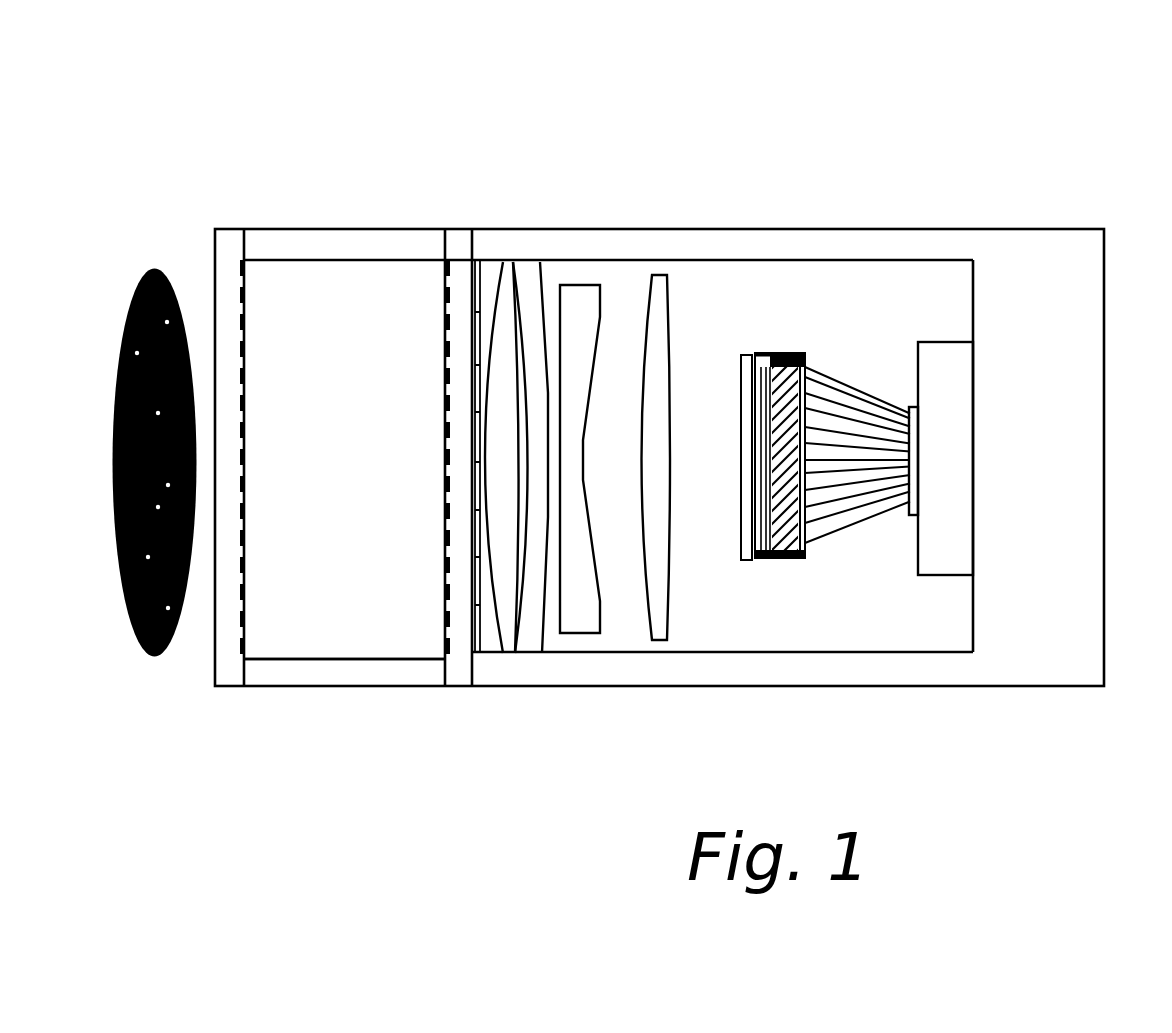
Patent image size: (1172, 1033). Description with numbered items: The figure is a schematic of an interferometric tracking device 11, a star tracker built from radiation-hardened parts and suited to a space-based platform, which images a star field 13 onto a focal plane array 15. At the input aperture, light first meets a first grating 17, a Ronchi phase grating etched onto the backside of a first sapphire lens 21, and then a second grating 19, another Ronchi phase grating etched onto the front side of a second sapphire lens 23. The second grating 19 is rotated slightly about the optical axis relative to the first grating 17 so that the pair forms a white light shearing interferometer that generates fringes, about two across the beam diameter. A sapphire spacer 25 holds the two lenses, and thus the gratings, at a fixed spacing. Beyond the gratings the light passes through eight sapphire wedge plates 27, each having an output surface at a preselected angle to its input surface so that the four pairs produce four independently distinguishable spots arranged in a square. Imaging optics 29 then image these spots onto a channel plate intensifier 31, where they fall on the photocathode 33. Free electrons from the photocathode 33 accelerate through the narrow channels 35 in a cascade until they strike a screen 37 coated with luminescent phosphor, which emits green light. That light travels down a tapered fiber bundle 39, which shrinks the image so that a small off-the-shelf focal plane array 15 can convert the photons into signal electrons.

The interferometric tracking device 11 is at (787, 122).
The star field 13 is at (130, 637).
The focal plane array 15 is at (907, 517).
The first grating 17 is at (247, 583).
The second grating 19 is at (440, 490).
The first sapphire lens 21 is at (227, 677).
The second sapphire lens 23 is at (455, 692).
The sapphire spacer 25 is at (328, 678).
The wedge plates 27 is at (480, 287).
The imaging optics 29 is at (752, 690).
The channel plate intensifier 31 is at (803, 348).
The photocathode 33 is at (770, 560).
The channels 35 is at (803, 555).
The screen 37 is at (807, 368).
The tapered fiber bundle 39 is at (852, 398).